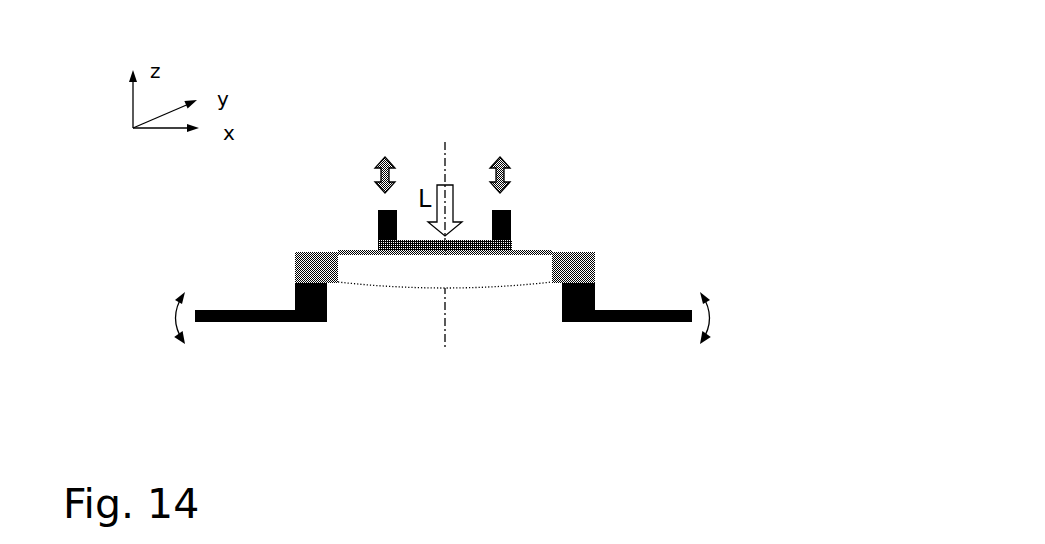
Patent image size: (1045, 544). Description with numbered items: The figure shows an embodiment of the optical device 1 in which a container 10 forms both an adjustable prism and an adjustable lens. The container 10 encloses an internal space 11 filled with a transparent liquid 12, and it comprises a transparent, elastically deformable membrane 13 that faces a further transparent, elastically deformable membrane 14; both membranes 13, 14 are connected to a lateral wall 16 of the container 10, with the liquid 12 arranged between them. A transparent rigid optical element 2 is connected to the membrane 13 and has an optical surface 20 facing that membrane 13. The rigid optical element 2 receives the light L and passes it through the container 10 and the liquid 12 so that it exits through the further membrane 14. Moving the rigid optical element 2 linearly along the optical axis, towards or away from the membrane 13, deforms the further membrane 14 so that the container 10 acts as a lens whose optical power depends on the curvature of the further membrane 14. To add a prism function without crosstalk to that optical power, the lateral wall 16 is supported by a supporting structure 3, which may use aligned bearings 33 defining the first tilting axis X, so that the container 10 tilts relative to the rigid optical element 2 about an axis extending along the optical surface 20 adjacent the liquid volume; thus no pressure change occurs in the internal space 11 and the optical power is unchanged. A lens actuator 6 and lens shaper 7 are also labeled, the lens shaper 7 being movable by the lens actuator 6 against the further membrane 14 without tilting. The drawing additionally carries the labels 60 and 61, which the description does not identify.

The optical device 1 is at (329, 210).
The transparent rigid optical element 2 is at (470, 240).
The supporting structure 3 is at (668, 310).
The lens actuator 6 is at (508, 177).
The lens shaper 7 is at (327, 292).
The container 10 is at (295, 270).
The internal space 11 is at (433, 273).
The transparent liquid 12 is at (455, 273).
The membrane 13 is at (352, 250).
The further membrane 14 is at (515, 285).
The lateral wall 16 is at (575, 267).
The optical surface 20 is at (407, 240).
The bearings 33 is at (353, 374).
The tilt movement 60 is at (710, 318).
The tilt movement 61 is at (170, 307).